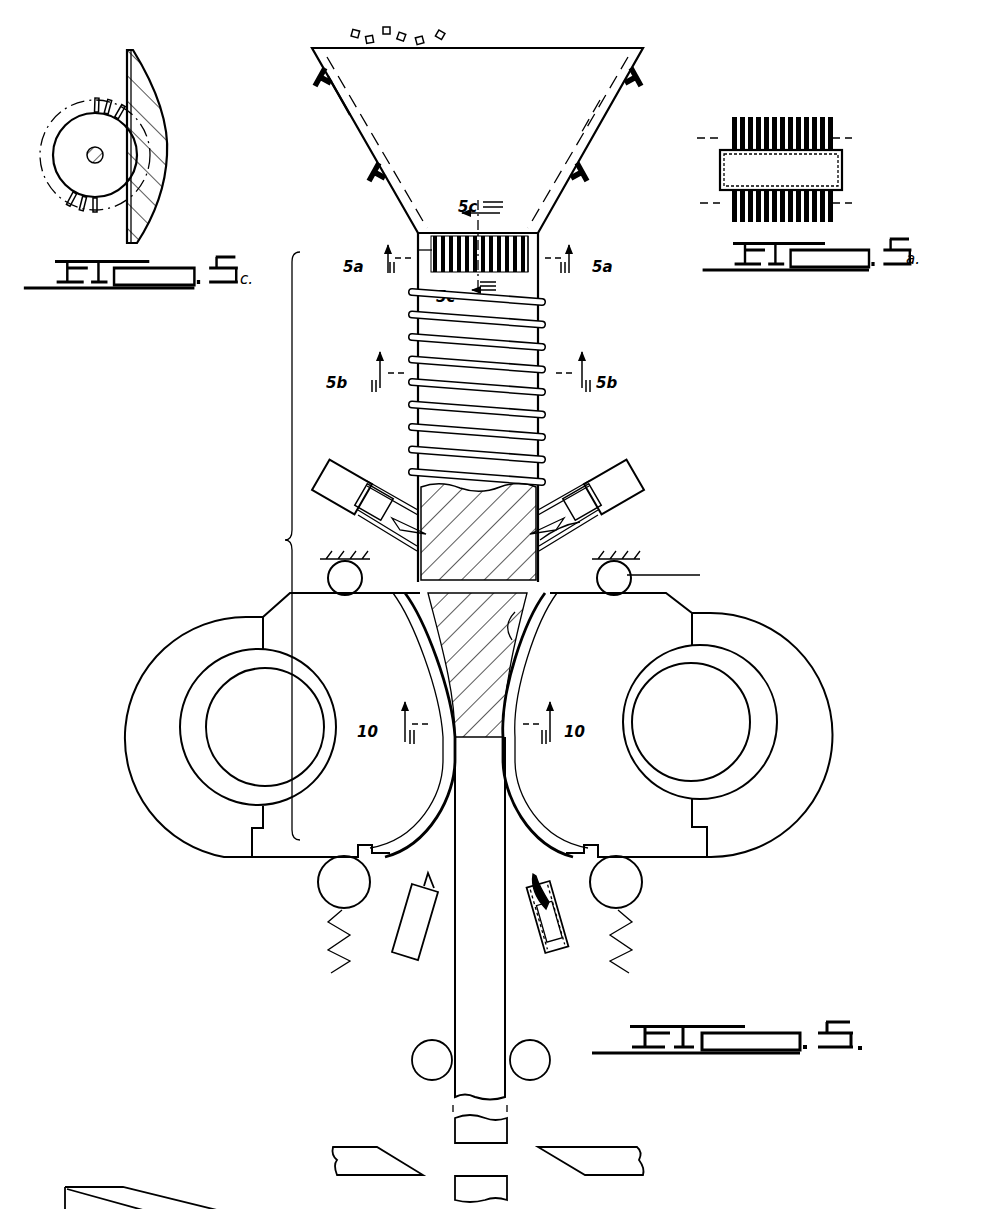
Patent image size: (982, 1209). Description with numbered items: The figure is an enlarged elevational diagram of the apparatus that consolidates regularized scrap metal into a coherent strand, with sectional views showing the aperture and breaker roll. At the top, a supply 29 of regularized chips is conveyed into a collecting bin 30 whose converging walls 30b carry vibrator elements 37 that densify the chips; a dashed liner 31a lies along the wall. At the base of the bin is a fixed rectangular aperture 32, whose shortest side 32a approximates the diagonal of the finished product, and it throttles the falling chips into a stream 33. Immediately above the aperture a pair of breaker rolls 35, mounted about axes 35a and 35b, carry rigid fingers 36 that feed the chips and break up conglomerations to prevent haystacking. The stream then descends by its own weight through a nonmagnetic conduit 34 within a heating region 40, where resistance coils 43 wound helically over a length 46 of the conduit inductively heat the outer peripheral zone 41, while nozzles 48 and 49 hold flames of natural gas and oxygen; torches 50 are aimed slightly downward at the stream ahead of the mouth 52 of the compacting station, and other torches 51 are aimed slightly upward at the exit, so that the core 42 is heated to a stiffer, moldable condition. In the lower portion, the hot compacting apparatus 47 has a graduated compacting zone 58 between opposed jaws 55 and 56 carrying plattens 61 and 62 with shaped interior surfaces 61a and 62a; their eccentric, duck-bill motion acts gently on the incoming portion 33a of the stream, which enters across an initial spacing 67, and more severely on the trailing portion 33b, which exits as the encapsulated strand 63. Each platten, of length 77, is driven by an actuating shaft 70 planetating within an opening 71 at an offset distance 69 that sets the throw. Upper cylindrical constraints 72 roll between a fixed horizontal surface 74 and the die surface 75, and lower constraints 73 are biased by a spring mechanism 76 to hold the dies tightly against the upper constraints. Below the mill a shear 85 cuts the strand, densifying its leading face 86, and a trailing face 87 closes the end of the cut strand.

In FIG. 5, the supply of regularized chips or blocks 29 is at (400, 45).
In FIG. 5, the collecting bin 30 is at (585, 153).
In FIG. 5, the converging walls 30b is at (362, 140).
In FIG. 5, the hopper liner 31a is at (593, 118).
In FIG. 5, the aperture 32 is at (518, 272).
In FIG. 5A, the aperture 32 is at (835, 167).
In FIG. 5A, the shortest side of the aperture 32a is at (720, 170).
In FIG. 5, the stream of regularized scrap pieces 33 is at (428, 495).
In FIG. 5, the incoming portion of the stream 33a is at (505, 660).
In FIG. 5, the trailing portion of the stream 33b is at (492, 756).
In FIG. 5, the nonmagnetic conduit 34 is at (545, 442).
In FIG. 5, the breaker rolls 35 is at (412, 270).
In FIG. 5C, the breaker rolls 35 is at (86, 219).
In FIG. 5A, the axis of breaker roll 35a is at (848, 135).
In FIG. 5C, the axis of breaker roll 35a is at (93, 157).
In FIG. 5A, the axis of breaker roll 35b is at (842, 203).
In FIG. 5, the fingers 36 is at (497, 238).
In FIG. 5A, the fingers 36 is at (812, 120).
In FIG. 5C, the fingers 36 is at (90, 112).
In FIG. 5, the vibrator elements 37 is at (318, 95).
In FIG. 5, the heating region 40 is at (392, 536).
In FIG. 5, the outer peripheral zone 41 is at (512, 688).
In FIG. 5, the core 42 is at (452, 698).
In FIG. 5, the resistance coils 43 is at (418, 332).
In FIG. 5, the length of the conduit 46 is at (706, 574).
In FIG. 5, the hot compacting apparatus 47 is at (775, 612).
In FIG. 5, the nozzle 48 is at (560, 495).
In FIG. 5, the nozzle 49 is at (552, 920).
In FIG. 5, the flame torches 50 is at (582, 522).
In FIG. 5, the torches 51 is at (540, 876).
In FIG. 5, the mouth of the compacting station 52 is at (538, 606).
In FIG. 5, the jaw 55 is at (598, 794).
In FIG. 5, the jaw 56 is at (398, 786).
In FIG. 5, the graduated compacting zone 58 is at (626, 822).
In FIG. 5, the platten 61 is at (525, 682).
In FIG. 5, the interior surface of platten 61a is at (520, 636).
In FIG. 5, the platten 62 is at (438, 670).
In FIG. 5, the interior surface of platten 62a is at (440, 648).
In FIG. 5, the encapsulated strand 63 is at (495, 1002).
In FIG. 5, the initial spacing between the mouth of the plattens 67 is at (533, 588).
In FIG. 5, the offset distance 69 is at (718, 702).
In FIG. 5, the actuating shaft 70 is at (746, 746).
In FIG. 5, the opening 71 is at (762, 682).
In FIG. 5, the upper cylindrical constraint 72 is at (350, 596).
In FIG. 5, the lower cylindrical constraint 73 is at (322, 882).
In FIG. 5, the fixed horizontal surface 74 is at (626, 560).
In FIG. 5, the horizontal surface of the die 75 is at (648, 588).
In FIG. 5, the spring or suspension mechanism 76 is at (636, 950).
In FIG. 5, the length of platten 77 is at (317, 850).
In FIG. 5, the shear 85 is at (606, 1152).
In FIG. 5, the leading face 86 is at (462, 1140).
In FIG. 5, the lower clamp 87 is at (500, 1178).